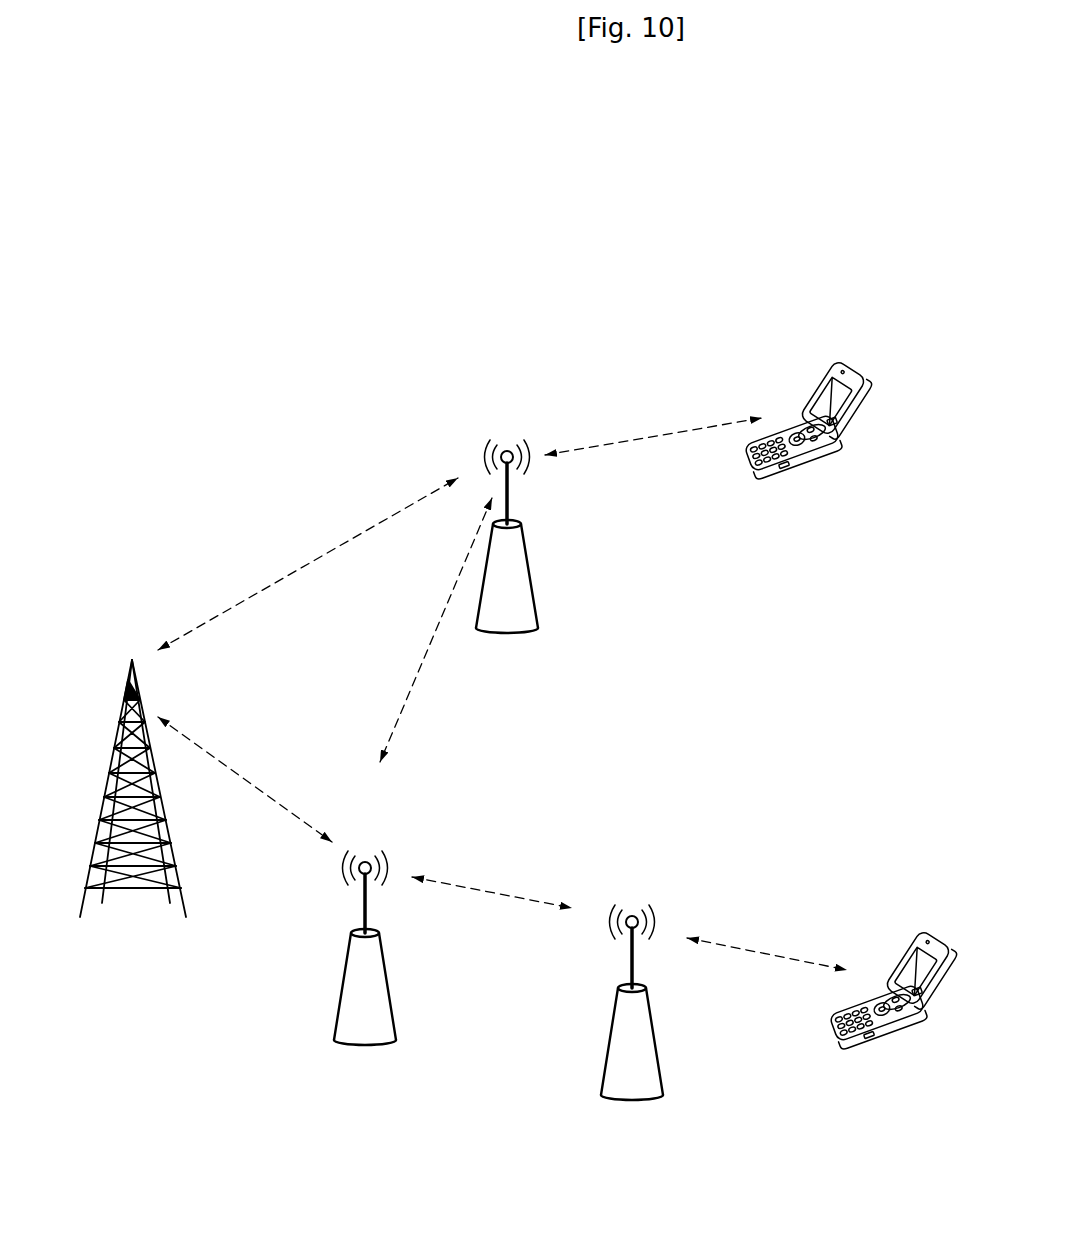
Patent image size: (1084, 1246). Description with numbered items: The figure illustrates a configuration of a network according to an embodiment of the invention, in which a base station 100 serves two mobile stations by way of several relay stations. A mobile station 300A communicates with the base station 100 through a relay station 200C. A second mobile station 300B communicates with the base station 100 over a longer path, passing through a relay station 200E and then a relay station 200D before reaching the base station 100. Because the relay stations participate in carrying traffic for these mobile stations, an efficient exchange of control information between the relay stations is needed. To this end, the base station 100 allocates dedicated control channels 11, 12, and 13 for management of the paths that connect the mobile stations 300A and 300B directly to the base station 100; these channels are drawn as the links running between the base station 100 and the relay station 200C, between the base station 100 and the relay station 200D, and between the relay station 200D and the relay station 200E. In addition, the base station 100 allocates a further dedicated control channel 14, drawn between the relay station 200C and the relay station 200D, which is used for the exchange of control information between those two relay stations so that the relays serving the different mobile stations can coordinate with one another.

The base station 100 is at (131, 656).
The dedicated control channel 11 is at (300, 567).
The dedicated control channel 12 is at (246, 775).
The dedicated control channel 13 is at (530, 900).
The dedicated control channel 14 is at (422, 663).
The relay station 200C is at (508, 449).
The relay station 200D is at (366, 860).
The relay station 200E is at (632, 914).
The mobile station 300A is at (812, 381).
The mobile station 300B is at (897, 949).